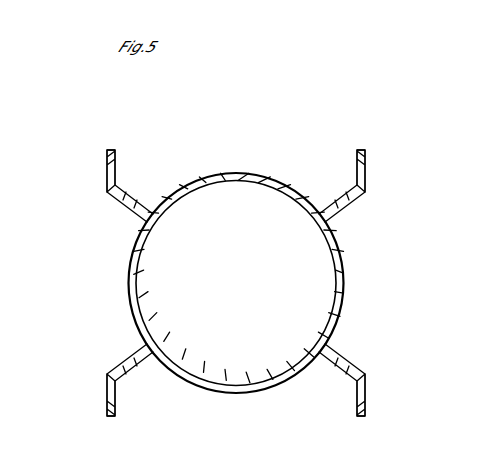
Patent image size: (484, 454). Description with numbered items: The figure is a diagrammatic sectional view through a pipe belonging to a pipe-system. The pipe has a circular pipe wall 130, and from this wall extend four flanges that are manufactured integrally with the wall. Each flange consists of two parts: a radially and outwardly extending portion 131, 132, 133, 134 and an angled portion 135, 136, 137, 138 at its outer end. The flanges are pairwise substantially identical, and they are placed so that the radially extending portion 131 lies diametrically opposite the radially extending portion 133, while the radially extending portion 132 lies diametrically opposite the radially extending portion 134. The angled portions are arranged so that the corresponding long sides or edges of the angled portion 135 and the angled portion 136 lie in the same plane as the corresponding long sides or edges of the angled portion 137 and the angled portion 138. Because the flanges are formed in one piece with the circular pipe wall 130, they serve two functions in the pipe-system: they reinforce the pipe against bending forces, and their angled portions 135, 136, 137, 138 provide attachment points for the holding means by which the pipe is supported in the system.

The circular pipe wall 130 is at (174, 198).
The radially and outwardly extending portion 131 is at (131, 206).
The radially and outwardly extending portion 132 is at (130, 360).
The radially and outwardly extending portion 133 is at (340, 362).
The radially and outwardly extending portion 134 is at (336, 200).
The angled portion 135 is at (107, 167).
The angled portion 136 is at (107, 392).
The angled portion 137 is at (366, 392).
The angled portion 138 is at (365, 173).